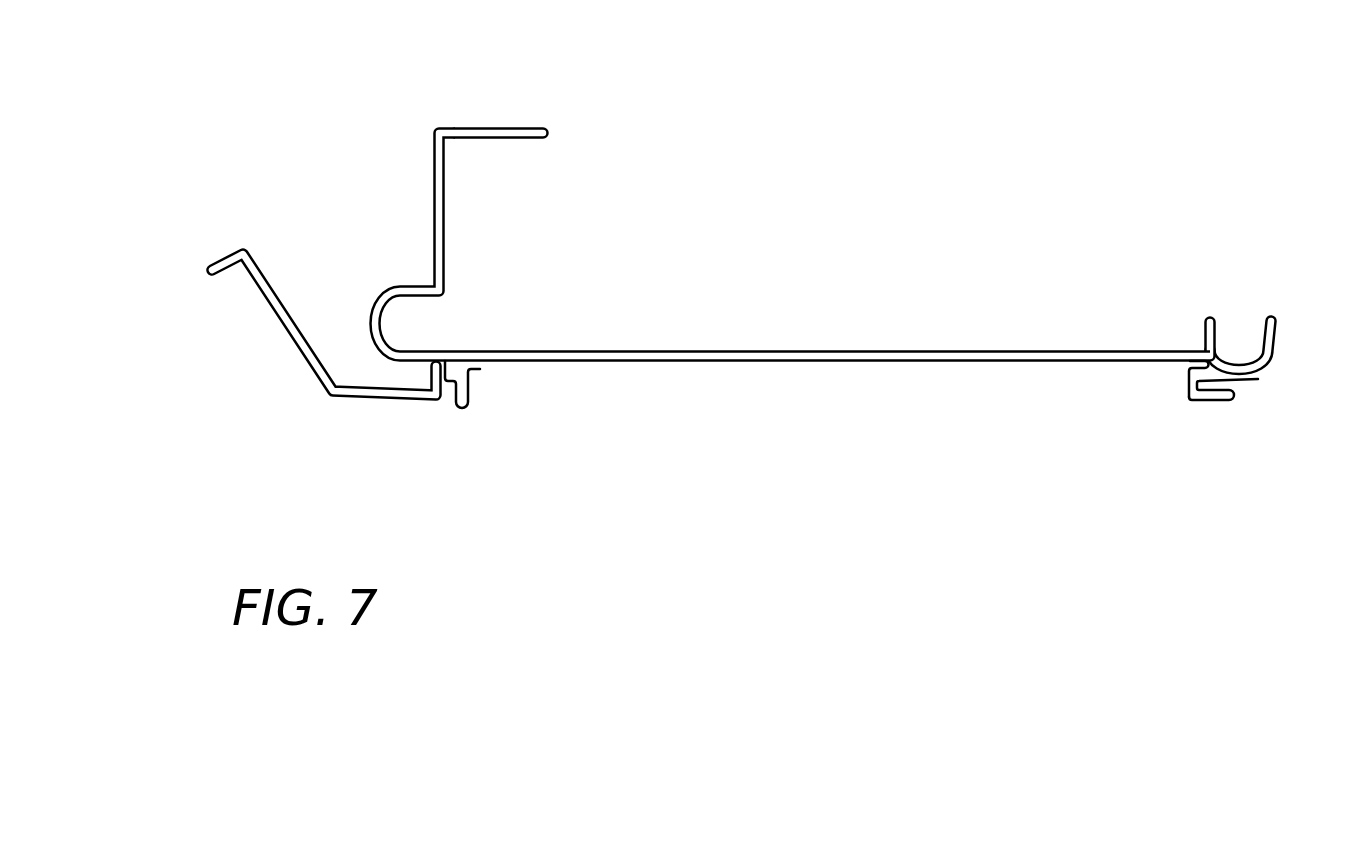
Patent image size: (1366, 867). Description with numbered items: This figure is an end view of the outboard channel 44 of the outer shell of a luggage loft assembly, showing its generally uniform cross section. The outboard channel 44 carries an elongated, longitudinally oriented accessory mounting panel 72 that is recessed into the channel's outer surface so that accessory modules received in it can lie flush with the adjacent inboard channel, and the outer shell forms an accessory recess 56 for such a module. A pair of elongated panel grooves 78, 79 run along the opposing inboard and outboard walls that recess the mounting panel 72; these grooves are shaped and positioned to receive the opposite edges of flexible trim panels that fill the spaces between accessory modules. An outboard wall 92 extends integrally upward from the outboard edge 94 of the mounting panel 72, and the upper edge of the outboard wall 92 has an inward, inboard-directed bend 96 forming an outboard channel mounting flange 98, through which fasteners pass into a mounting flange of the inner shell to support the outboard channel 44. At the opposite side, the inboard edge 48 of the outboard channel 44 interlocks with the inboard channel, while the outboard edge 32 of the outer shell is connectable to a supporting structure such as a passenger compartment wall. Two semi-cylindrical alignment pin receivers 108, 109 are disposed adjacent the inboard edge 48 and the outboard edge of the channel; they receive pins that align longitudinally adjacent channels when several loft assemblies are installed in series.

The outboard edge 32 is at (229, 267).
The outboard channel 44 is at (880, 365).
The inboard edge 48 is at (1233, 400).
The accessory recess 56 is at (448, 252).
The accessory mounting panel 72 is at (727, 353).
The panel groove 78 is at (1195, 365).
The panel groove 79 is at (480, 369).
The outboard wall 92 is at (440, 204).
The outboard edge 94 is at (407, 355).
The inboard-directed bend 96 is at (438, 129).
The outboard channel mounting flange 98 is at (512, 133).
The alignment pin receiver 108 is at (386, 293).
The alignment pin receiver 109 is at (1260, 350).